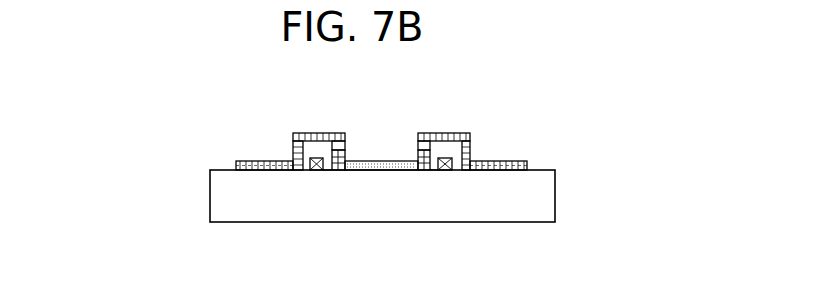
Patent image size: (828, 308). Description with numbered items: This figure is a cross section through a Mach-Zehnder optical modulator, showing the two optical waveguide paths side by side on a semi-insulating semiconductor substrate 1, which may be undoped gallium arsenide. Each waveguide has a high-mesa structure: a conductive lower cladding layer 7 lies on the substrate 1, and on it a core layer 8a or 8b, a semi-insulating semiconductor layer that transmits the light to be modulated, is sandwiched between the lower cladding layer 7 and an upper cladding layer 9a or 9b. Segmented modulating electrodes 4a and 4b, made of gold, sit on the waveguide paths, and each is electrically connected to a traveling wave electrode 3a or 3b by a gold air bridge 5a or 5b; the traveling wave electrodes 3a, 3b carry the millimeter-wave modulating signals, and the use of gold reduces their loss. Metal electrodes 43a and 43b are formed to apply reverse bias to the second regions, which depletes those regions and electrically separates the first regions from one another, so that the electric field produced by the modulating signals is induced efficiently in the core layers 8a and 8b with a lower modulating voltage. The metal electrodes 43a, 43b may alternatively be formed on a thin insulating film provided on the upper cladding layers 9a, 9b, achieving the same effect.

The semi-insulating semiconductor substrate 1 is at (525, 207).
The traveling wave electrode 3a is at (253, 160).
The traveling wave electrode 3b is at (507, 160).
The modulating electrode 4a is at (337, 133).
The modulating electrode 4b is at (423, 133).
The air bridge 5a is at (293, 142).
The air bridge 5b is at (470, 142).
The lower cladding layer 7 is at (382, 170).
The core layer 8a is at (338, 172).
The core layer 8b is at (427, 172).
The upper cladding layer 9a is at (343, 147).
The upper cladding layer 9b is at (418, 143).
The metal electrode 43a is at (310, 172).
The metal electrode 43b is at (453, 172).